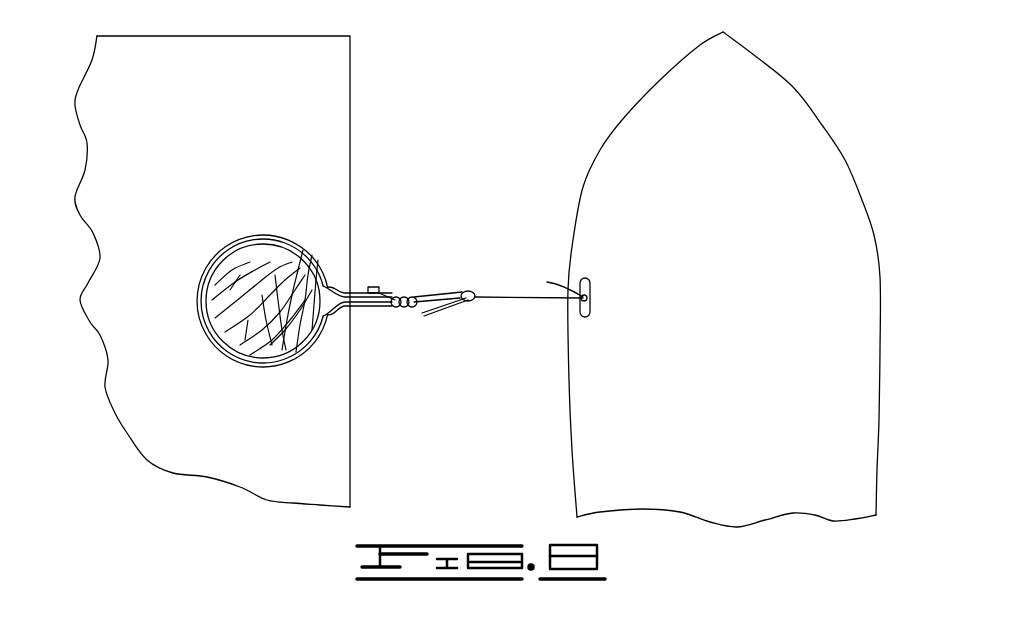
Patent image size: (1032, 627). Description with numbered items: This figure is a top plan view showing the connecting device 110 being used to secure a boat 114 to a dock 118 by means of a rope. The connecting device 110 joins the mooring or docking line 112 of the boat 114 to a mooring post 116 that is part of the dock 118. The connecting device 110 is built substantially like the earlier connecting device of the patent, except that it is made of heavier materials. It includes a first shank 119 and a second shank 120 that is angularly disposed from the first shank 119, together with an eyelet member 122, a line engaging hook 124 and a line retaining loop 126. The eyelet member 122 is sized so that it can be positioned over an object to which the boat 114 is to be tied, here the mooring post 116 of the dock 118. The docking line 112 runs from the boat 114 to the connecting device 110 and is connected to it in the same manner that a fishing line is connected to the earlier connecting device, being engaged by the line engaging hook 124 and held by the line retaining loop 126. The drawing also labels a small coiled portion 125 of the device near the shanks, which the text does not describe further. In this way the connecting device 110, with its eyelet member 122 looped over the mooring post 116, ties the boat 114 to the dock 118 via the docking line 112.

The connecting device 110 is at (468, 256).
The docking line 112 is at (543, 303).
The boat 114 is at (630, 132).
The mooring post 116 is at (250, 270).
The dock 118 is at (323, 148).
The first shank 119 is at (363, 307).
The second shank 120 is at (366, 292).
The eyelet member 122 is at (263, 368).
The line engaging hook 124 is at (376, 286).
The coil 125 is at (385, 294).
The line retaining loop 126 is at (467, 291).